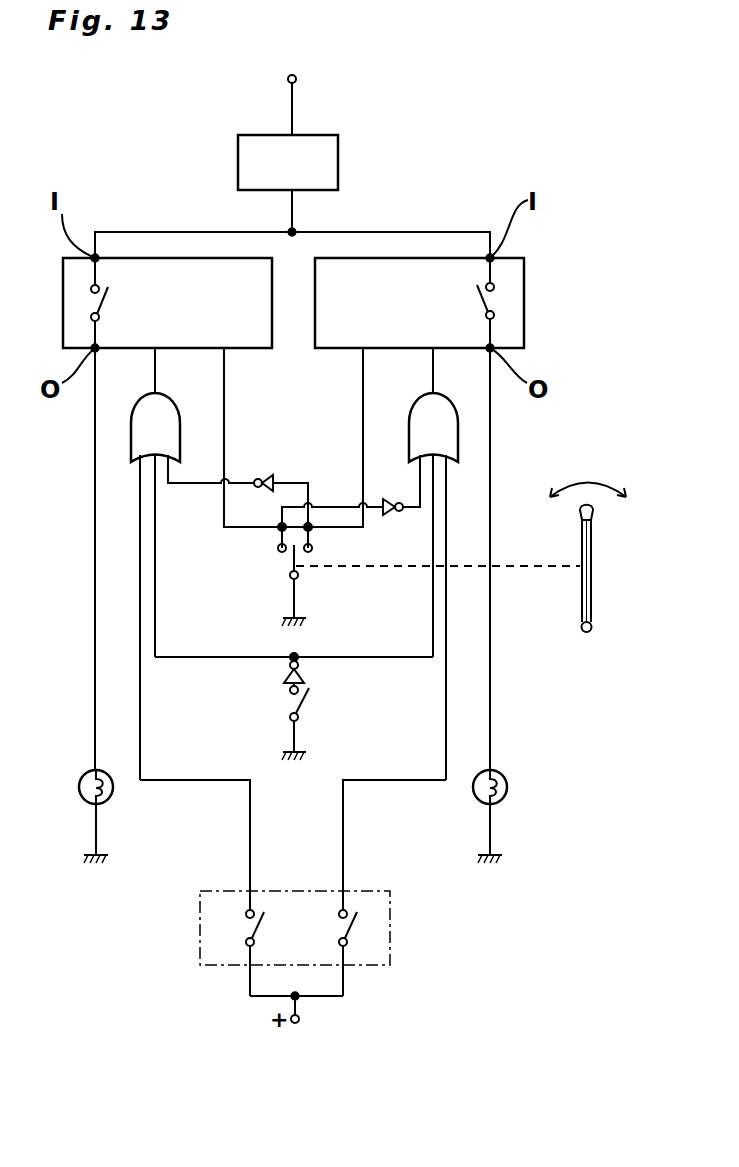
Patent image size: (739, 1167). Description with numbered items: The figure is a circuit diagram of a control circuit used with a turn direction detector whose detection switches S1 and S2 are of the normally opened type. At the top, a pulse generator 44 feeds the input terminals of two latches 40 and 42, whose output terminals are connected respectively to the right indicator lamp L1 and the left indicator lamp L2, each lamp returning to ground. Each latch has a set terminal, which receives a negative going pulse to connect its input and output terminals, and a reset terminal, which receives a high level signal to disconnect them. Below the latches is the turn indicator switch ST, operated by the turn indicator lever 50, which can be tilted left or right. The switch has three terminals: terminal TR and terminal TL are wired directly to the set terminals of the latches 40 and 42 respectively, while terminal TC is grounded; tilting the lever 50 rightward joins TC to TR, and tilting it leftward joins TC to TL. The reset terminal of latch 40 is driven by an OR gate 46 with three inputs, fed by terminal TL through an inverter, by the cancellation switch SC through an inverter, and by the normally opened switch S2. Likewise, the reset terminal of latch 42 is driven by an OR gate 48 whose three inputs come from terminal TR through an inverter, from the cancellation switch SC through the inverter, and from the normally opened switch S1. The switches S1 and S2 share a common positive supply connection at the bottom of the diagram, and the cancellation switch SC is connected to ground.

The pulse generator 44 is at (338, 135).
The latch 42 is at (167, 303).
The latch 40 is at (419, 303).
The OR gate 48 is at (155, 405).
The OR gate 46 is at (433, 405).
The turn indicator lever 50 is at (592, 598).
The terminal TL is at (277, 547).
The terminal TR is at (312, 548).
The turn indicator switch ST is at (273, 562).
The terminal TC is at (291, 578).
The cancellation switch SC is at (285, 701).
The right indicator lamp L1 is at (509, 816).
The left indicator lamp L2 is at (76, 816).
The normally opened type switch S1 is at (250, 922).
The normally opened type switch S2 is at (352, 922).